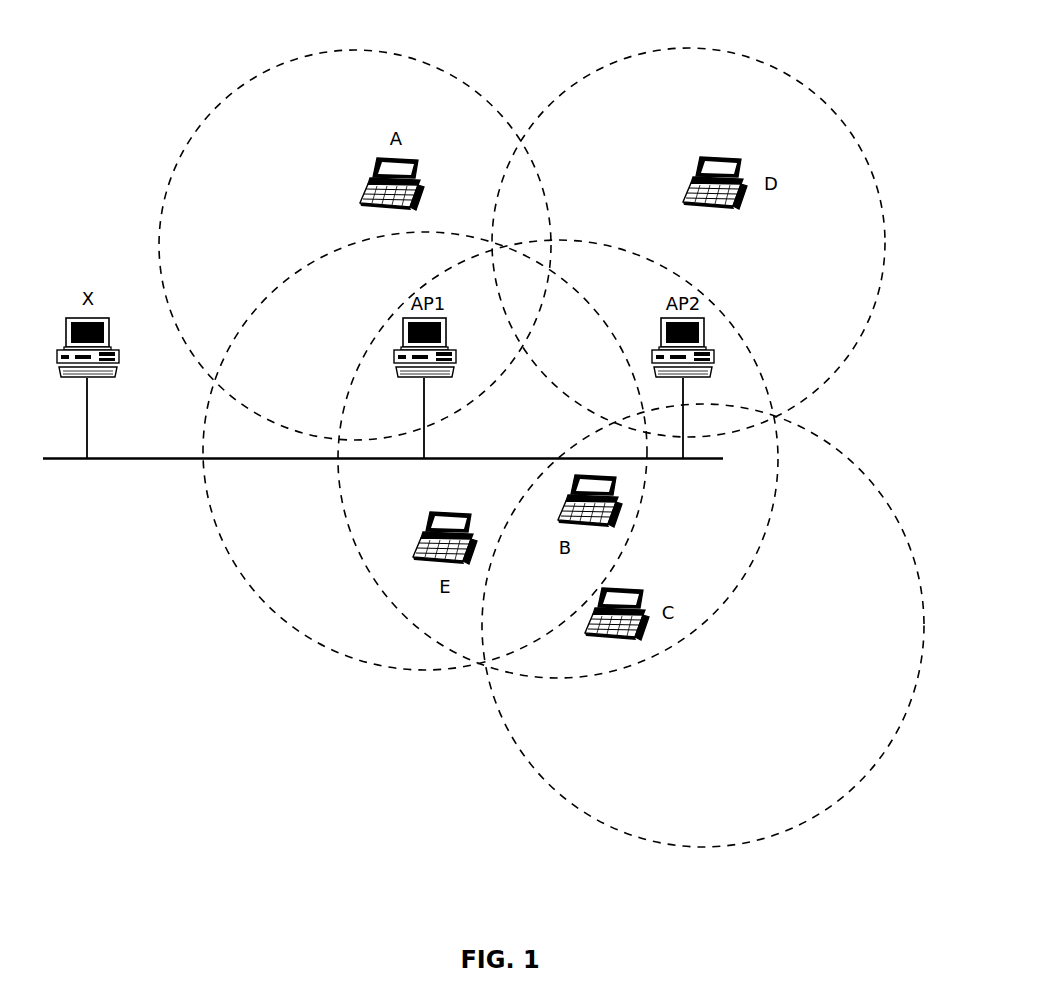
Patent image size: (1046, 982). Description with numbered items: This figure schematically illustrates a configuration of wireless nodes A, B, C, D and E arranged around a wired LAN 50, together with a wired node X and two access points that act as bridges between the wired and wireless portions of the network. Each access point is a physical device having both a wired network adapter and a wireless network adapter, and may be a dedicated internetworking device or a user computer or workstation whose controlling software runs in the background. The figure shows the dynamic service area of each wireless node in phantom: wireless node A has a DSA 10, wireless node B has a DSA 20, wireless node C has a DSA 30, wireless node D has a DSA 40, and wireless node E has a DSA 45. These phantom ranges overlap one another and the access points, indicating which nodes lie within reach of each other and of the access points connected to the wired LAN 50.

The DSA of wireless node A 10 is at (322, 52).
The DSA of wireless node B 20 is at (763, 538).
The DSA of wireless node C 30 is at (863, 760).
The DSA of wireless node D 40 is at (860, 330).
The DSA of wireless node E 45 is at (278, 608).
The wired LAN 50 is at (62, 462).